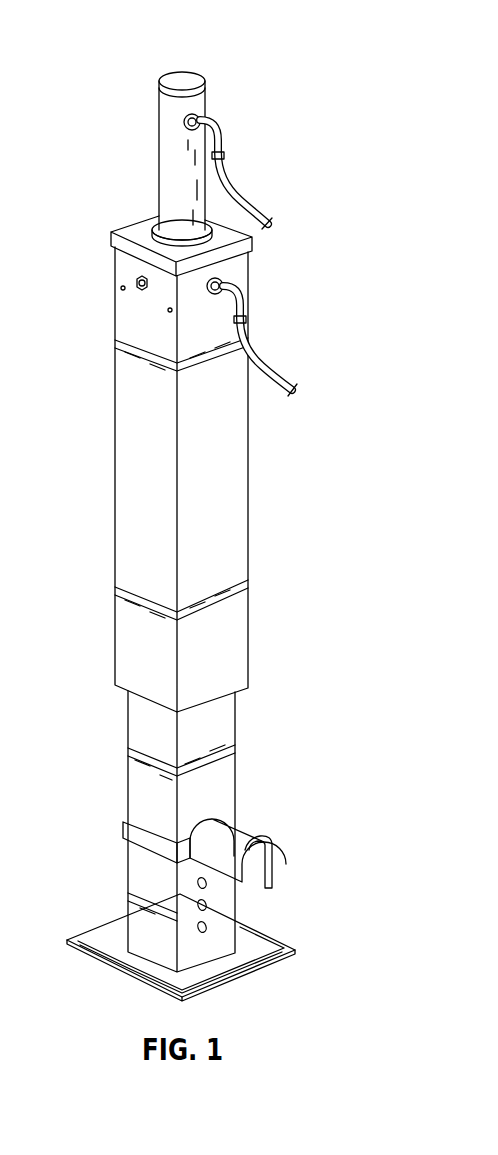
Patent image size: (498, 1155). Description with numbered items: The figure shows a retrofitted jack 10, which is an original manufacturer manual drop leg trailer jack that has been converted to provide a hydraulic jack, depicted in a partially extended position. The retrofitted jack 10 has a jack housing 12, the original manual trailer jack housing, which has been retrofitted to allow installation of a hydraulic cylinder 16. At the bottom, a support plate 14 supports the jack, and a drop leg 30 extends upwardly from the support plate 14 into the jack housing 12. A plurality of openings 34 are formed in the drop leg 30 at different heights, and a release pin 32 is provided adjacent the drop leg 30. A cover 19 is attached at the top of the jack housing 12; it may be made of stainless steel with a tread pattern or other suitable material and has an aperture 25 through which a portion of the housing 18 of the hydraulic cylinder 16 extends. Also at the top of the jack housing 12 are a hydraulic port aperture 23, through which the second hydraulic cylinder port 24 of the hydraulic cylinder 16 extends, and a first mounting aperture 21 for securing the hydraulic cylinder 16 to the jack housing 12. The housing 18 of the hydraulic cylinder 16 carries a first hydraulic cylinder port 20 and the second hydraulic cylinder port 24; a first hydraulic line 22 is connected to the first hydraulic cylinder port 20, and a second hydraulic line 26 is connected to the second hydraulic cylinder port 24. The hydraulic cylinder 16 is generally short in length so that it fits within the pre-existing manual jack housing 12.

The retrofitted jack 10 is at (207, 520).
The jack housing 12 is at (202, 464).
The support plate 14 is at (115, 952).
The hydraulic cylinder 16 is at (190, 159).
The housing 18 is at (157, 160).
The cover 19 is at (262, 174).
The first hydraulic cylinder port 20 is at (203, 121).
The first mounting aperture 21 is at (132, 288).
The first hydraulic line 22 is at (260, 213).
The hydraulic port aperture 23 is at (225, 278).
The second hydraulic cylinder port 24 is at (284, 341).
The aperture 25 is at (153, 229).
The second hydraulic line 26 is at (280, 379).
The drop leg 30 is at (241, 854).
The release pin 32 is at (275, 858).
The openings 34 is at (208, 927).